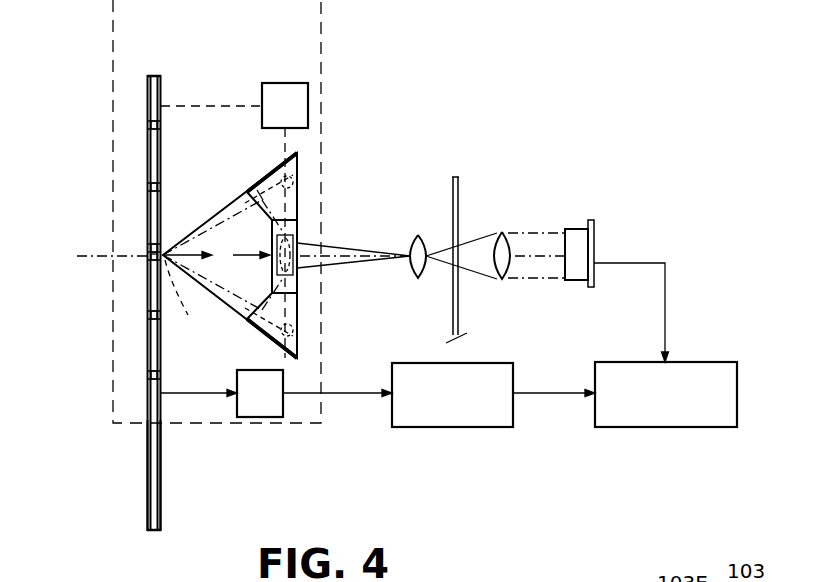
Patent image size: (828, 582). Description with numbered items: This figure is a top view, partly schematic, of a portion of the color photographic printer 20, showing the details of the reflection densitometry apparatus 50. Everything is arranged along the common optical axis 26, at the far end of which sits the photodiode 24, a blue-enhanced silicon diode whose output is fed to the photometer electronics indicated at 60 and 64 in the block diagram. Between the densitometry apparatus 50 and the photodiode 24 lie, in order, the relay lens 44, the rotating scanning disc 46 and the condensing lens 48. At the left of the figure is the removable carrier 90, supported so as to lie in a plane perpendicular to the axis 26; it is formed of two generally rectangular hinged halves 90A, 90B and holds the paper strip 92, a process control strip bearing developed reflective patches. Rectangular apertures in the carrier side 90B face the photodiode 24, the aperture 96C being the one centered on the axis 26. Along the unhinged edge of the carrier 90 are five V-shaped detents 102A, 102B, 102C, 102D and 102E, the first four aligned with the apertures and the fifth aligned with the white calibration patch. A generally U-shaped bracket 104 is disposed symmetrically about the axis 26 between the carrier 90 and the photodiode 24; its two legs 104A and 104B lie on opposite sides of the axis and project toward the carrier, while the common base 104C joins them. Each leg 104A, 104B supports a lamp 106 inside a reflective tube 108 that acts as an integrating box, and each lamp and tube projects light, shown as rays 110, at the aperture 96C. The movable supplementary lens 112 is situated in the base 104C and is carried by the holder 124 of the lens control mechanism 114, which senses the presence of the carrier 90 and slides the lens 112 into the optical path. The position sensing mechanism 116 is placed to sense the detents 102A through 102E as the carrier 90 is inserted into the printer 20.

The color photographic printer 20 is at (418, 104).
The photodiode 24 is at (576, 229).
The optical axis 26 is at (103, 262).
The relay lens 44 is at (418, 235).
The rotating scanning disc 46 is at (455, 177).
The condensing lens 48 is at (502, 232).
The reflection densitometry apparatus 50 is at (307, 39).
The computer 60 is at (435, 410).
The photometer 64 is at (628, 410).
The removable carrier 90 is at (138, 101).
The carrier half 90A is at (147, 487).
The carrier half 90B is at (161, 456).
The paper strip 92 is at (161, 88).
The aperture 96C is at (187, 299).
The detent 102A is at (147, 375).
The detent 102B is at (147, 315).
The detent 102C is at (147, 248).
The detent 102D is at (147, 187).
The detent 102E is at (147, 125).
The U-shaped bracket 104 is at (245, 163).
The bracket leg 104A is at (238, 189).
The bracket leg 104B is at (297, 314).
The bracket base 104C is at (297, 229).
The lamp 106 is at (300, 185).
The reflective tube 108 is at (240, 206).
The rays 110 is at (197, 260).
The supplementary lens 112 is at (326, 247).
The lens control mechanism 114 is at (297, 113).
The position sensing mechanism 116 is at (258, 404).
The holder 124 is at (288, 271).